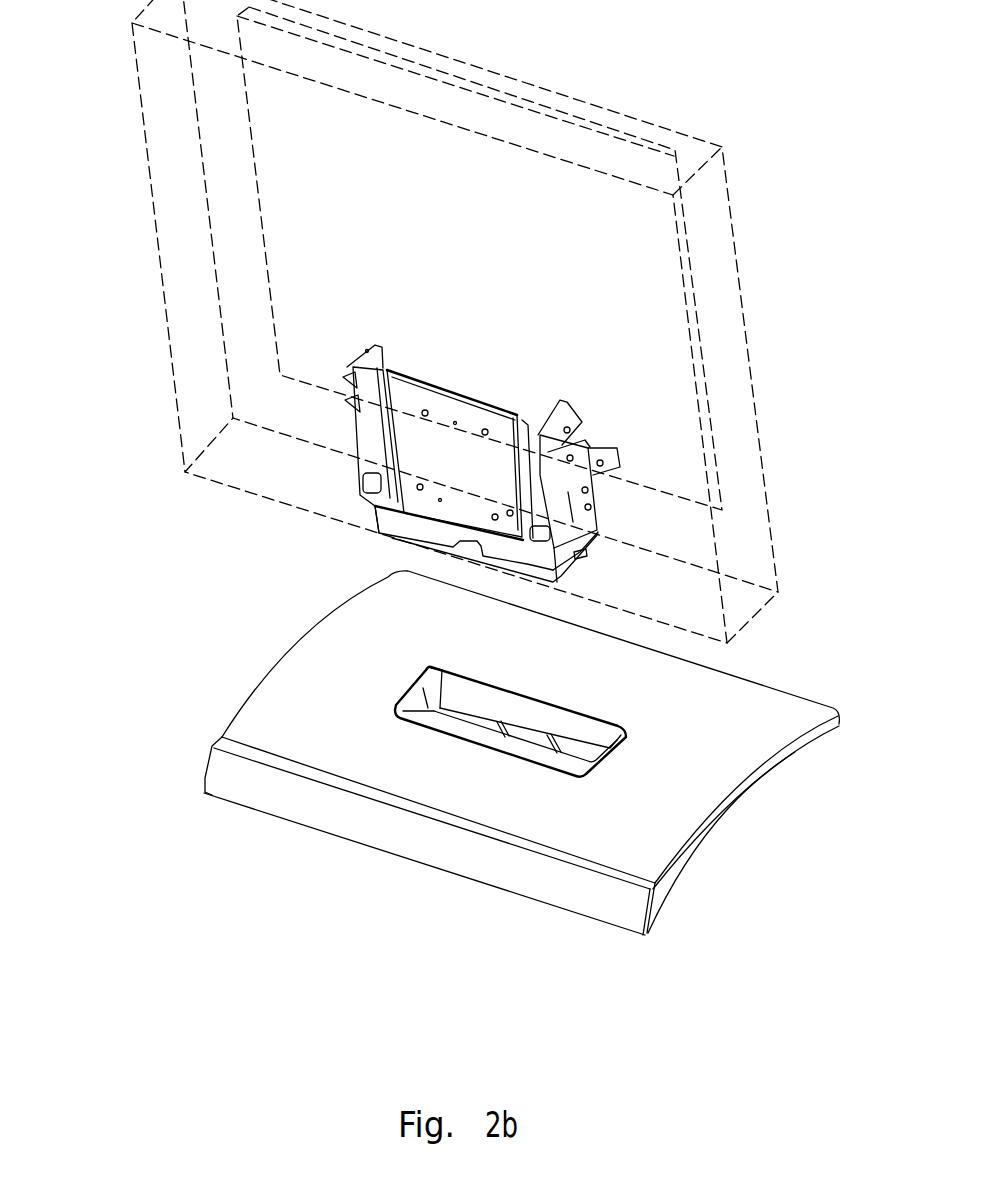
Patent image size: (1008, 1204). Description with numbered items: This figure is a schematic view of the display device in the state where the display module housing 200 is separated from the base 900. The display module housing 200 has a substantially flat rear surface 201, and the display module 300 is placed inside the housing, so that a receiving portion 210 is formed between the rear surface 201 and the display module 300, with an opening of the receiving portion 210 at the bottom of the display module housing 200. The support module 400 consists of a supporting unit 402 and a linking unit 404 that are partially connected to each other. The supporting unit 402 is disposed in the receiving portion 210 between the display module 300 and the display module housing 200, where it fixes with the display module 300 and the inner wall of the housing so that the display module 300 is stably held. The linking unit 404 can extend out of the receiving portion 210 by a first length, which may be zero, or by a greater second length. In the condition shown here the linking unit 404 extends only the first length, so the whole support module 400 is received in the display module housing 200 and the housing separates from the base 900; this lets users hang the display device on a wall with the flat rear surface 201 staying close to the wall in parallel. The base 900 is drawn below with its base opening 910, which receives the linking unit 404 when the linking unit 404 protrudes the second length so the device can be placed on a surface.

The display module housing 200 is at (731, 223).
The rear surface 201 is at (173, 128).
The display module 300 is at (262, 225).
The support module 400 is at (624, 463).
The supporting unit 402 is at (597, 490).
The linking unit 404 is at (597, 527).
The receiving portion 210 is at (374, 515).
The base 900 is at (315, 665).
The base opening 910 is at (453, 690).